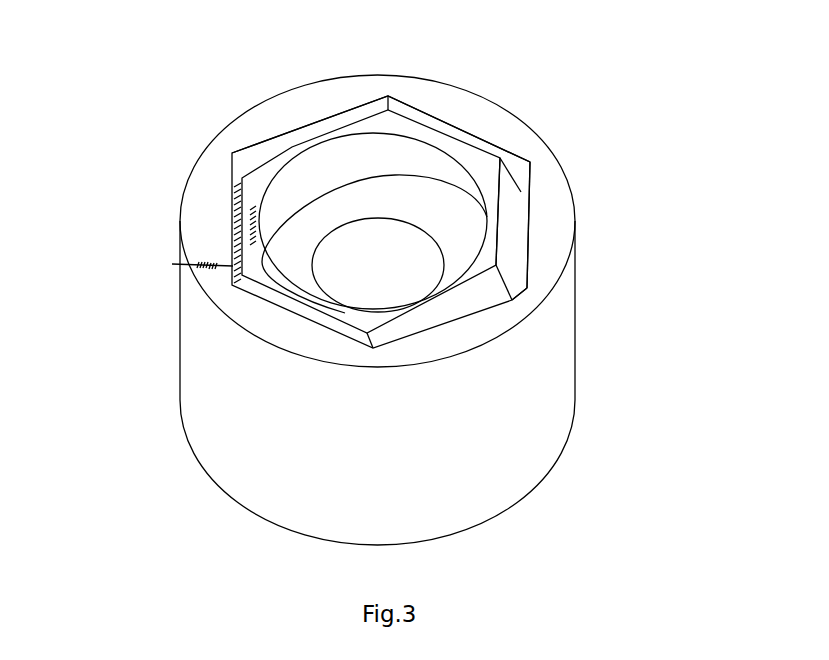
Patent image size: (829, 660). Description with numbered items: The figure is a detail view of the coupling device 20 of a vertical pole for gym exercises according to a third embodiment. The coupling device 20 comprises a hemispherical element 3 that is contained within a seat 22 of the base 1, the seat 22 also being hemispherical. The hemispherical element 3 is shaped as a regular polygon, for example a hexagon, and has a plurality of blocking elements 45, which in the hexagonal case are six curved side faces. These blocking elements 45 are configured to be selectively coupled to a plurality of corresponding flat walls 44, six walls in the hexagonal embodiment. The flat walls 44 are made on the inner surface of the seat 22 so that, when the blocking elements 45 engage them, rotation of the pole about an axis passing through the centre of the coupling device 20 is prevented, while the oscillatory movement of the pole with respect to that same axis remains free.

The base 1 is at (565, 447).
The hemispherical element 3 is at (360, 318).
The coupling device 20 is at (592, 132).
The seat 22 is at (512, 302).
The flat walls 44 is at (290, 139).
The blocking elements 45 is at (513, 231).